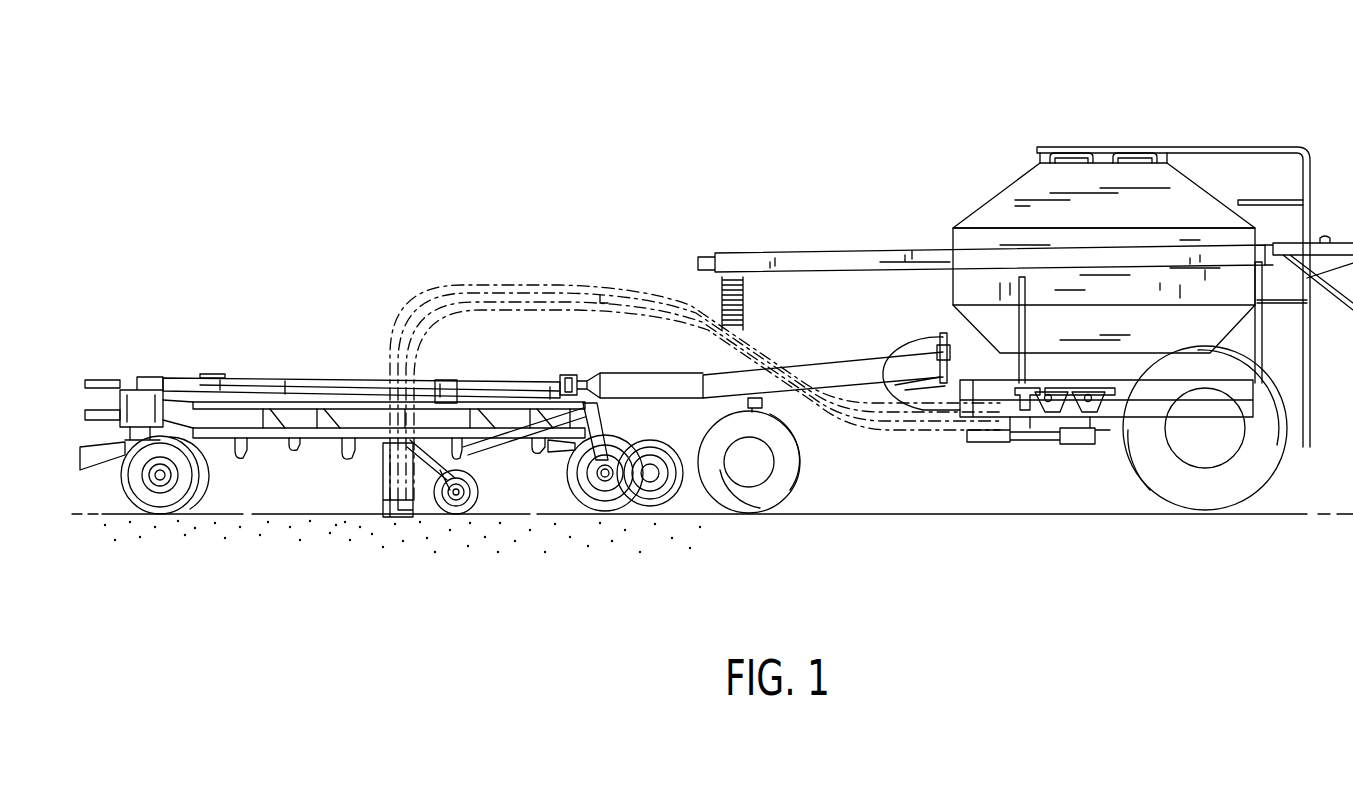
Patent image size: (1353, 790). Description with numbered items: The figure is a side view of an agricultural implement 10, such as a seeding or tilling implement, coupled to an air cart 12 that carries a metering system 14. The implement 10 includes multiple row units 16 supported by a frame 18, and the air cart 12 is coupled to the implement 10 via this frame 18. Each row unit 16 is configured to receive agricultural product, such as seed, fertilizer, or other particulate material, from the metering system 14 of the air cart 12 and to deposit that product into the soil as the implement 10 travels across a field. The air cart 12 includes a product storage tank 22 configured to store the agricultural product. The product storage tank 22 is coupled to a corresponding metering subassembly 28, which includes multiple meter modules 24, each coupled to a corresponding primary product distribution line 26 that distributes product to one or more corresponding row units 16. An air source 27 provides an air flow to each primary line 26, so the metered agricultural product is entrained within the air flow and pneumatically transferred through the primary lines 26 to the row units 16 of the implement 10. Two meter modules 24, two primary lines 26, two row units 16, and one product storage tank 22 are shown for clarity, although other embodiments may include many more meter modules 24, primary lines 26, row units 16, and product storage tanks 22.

The agricultural implement 10 is at (335, 330).
The air cart 12 is at (1008, 124).
The metering system 14 is at (1018, 452).
The row unit 16 is at (370, 500).
The frame 18 is at (185, 378).
The product storage tank 22 is at (1023, 186).
The meter module 24 is at (1103, 404).
The primary product distribution line 26 is at (580, 283).
The air source 27 is at (898, 345).
The metering subassembly 28 is at (1010, 400).